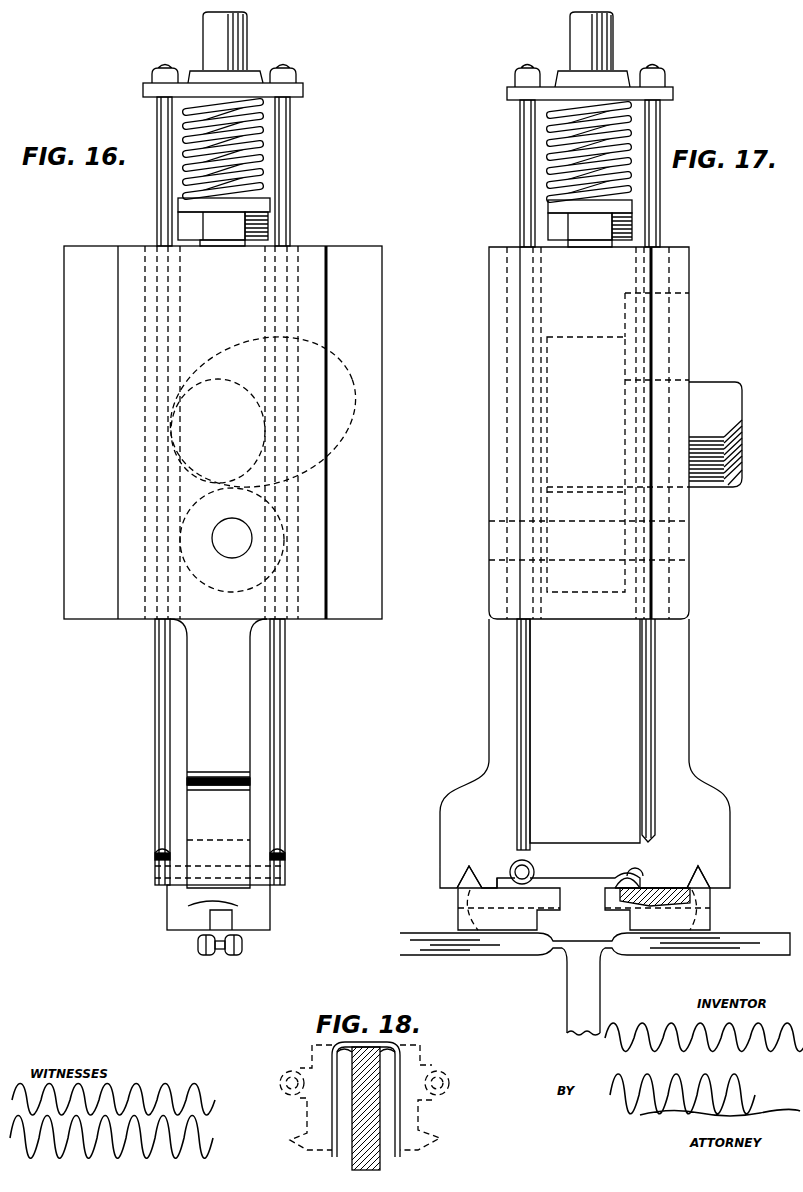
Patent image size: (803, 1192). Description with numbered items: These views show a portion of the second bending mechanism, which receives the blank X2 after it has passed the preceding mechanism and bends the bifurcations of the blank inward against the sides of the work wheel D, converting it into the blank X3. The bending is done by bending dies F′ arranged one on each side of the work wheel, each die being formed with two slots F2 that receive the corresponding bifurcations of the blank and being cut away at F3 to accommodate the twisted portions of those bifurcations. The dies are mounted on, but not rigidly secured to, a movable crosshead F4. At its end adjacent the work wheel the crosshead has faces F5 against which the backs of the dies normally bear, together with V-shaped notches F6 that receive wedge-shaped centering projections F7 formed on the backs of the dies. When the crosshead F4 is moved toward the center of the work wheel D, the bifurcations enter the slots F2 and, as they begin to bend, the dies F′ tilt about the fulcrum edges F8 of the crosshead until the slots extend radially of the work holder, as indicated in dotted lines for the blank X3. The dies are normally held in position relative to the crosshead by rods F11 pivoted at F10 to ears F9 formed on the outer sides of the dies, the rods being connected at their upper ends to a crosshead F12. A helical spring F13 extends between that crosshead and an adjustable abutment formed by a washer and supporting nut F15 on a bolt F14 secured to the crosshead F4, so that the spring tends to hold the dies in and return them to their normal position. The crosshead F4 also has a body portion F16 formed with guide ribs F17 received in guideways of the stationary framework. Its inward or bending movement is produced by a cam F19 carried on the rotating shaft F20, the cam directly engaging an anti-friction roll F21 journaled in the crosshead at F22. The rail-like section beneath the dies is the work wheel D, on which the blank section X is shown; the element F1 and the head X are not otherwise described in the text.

In FIG. 16, the bolt F14 is at (248, 33).
In FIG. 17, the bolt F14 is at (580, 33).
In FIG. 16, the crosshead F12 is at (330, 88).
In FIG. 17, the crosshead F12 is at (507, 94).
In FIG. 16, the helical spring F13 is at (262, 165).
In FIG. 17, the helical spring F13 is at (550, 150).
In FIG. 16, the supporting nut F15 is at (270, 222).
In FIG. 17, the supporting nut F15 is at (558, 228).
In FIG. 16, the body portion F16 is at (128, 250).
In FIG. 17, the body portion F16 is at (609, 620).
In FIG. 16, the guide ribs F17 is at (70, 307).
In FIG. 17, the guide ribs F17 is at (708, 514).
In FIG. 16, the cam F19 is at (346, 440).
In FIG. 17, the cam F19 is at (578, 337).
In FIG. 16, the rotating shaft F20 is at (218, 431).
In FIG. 17, the rotating shaft F20 is at (713, 392).
In FIG. 16, the anti-friction roll F21 is at (284, 563).
In FIG. 17, the anti-friction roll F21 is at (566, 620).
In FIG. 16, the journal F22 is at (232, 558).
In FIG. 17, the journal F22 is at (500, 521).
In FIG. 16, the bending dies F′ is at (306, 653).
In FIG. 17, the bending dies F′ is at (706, 705).
In FIG. 18, the bending dies F′ is at (313, 1158).
In FIG. 16, the movable crosshead F4 is at (220, 753).
In FIG. 17, the movable crosshead F4 is at (490, 708).
In FIG. 16, the rods F11 is at (155, 742).
In FIG. 17, the rods F11 is at (645, 729).
In FIG. 16, the pivot F10 is at (160, 860).
In FIG. 17, the pivot F10 is at (530, 868).
In FIG. 16, the ears F9 is at (172, 889).
In FIG. 17, the ears F9 is at (632, 888).
In FIG. 18, the ears F9 is at (280, 1078).
In FIG. 16, the slots F2 is at (230, 907).
In FIG. 16, the clamp block F1 is at (265, 913).
In FIG. 17, the clamp block F1 is at (462, 910).
In FIG. 16, the blank X2 is at (238, 955).
In FIG. 17, the V-shaped notches F6 is at (462, 882).
In FIG. 17, the faces F5 is at (500, 885).
In FIG. 17, the wedge-shaped centering projections F7 is at (455, 882).
In FIG. 17, the fulcrum edges F8 is at (533, 882).
In FIG. 17, the cut-away portions F3 is at (556, 916).
In FIG. 17, the rail head X is at (497, 955).
In FIG. 17, the work wheel D is at (598, 990).
In FIG. 18, the work wheel D is at (366, 1100).
In FIG. 18, the blank X3 is at (332, 1080).